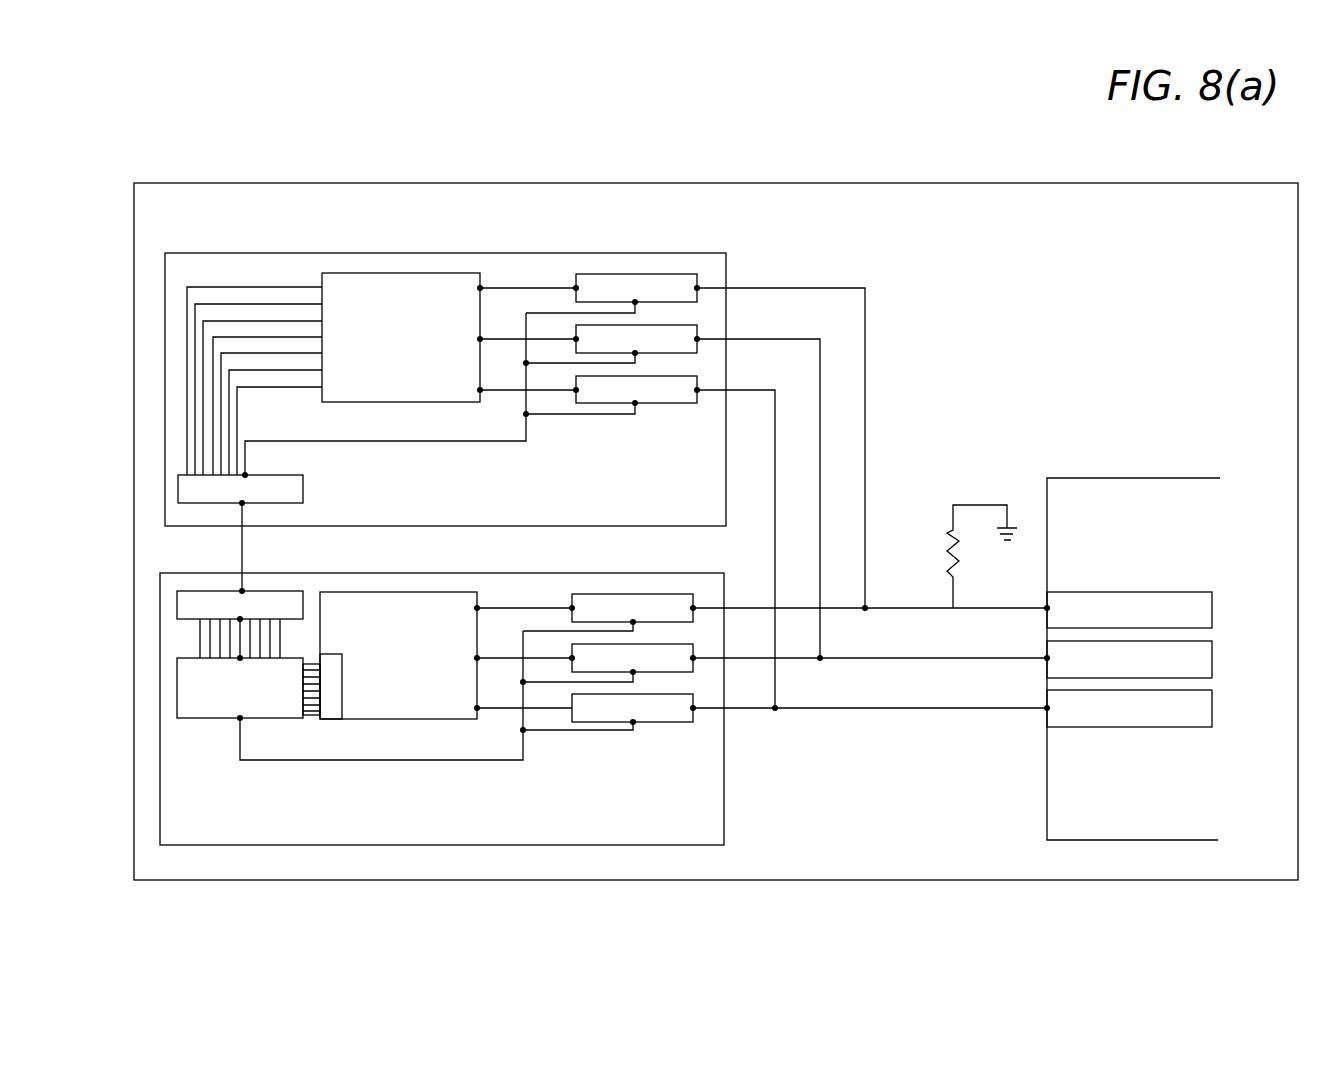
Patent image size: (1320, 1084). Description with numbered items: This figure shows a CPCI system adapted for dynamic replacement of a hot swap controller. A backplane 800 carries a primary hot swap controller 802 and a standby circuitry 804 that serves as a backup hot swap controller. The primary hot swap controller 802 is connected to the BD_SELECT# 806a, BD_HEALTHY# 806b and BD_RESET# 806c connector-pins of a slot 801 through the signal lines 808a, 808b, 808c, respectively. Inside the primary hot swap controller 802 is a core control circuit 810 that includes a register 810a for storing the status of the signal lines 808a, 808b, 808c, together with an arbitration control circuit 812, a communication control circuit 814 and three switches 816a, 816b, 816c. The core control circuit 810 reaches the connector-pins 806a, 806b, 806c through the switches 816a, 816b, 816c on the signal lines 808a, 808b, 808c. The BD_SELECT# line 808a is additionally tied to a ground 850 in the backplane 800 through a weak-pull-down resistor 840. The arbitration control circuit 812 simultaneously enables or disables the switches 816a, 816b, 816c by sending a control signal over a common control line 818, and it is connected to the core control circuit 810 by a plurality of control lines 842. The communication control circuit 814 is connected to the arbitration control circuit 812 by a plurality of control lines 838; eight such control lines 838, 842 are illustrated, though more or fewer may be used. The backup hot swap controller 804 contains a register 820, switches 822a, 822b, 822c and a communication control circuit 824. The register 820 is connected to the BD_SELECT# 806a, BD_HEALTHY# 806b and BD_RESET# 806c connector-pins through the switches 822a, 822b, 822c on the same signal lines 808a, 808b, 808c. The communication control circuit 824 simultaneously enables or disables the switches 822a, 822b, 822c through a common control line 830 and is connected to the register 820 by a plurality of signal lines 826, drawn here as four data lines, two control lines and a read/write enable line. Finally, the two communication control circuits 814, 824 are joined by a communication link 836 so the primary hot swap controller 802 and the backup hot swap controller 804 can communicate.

The backplane 800 is at (717, 183).
The slot 801 is at (1135, 478).
The hot swap controller 802 is at (724, 805).
The standby circuitry 804 is at (443, 253).
The BD_SELECT# connector-pin 806a is at (1130, 591).
The BD_HEALTHY# connector-pin 806b is at (1213, 662).
The BD_RESET# connector-pin 806c is at (1130, 728).
The BD_SELECT# signal line 808a is at (907, 607).
The BD_HEALTHY# signal line 808b is at (910, 655).
The BD_RESET# signal line 808c is at (868, 710).
The core control circuit 810 is at (395, 603).
The register 810a is at (337, 685).
The arbitration control circuit 812 is at (203, 708).
The communication control circuit 814 is at (267, 590).
The switch 816a is at (633, 593).
The switch 816b is at (693, 648).
The switch 816c is at (665, 723).
The common control line 818 is at (470, 762).
The register 820 is at (347, 287).
The switch 822a is at (637, 273).
The switch 822b is at (697, 333).
The switch 822c is at (697, 383).
The communication control circuit 824 is at (305, 490).
The signal lines 826 is at (275, 370).
The common control line 830 is at (480, 443).
The communication link 836 is at (240, 545).
The control lines 838 is at (200, 629).
The weak-pull-down resistor 840 is at (952, 533).
The control lines 842 is at (312, 717).
The ground 850 is at (1017, 528).